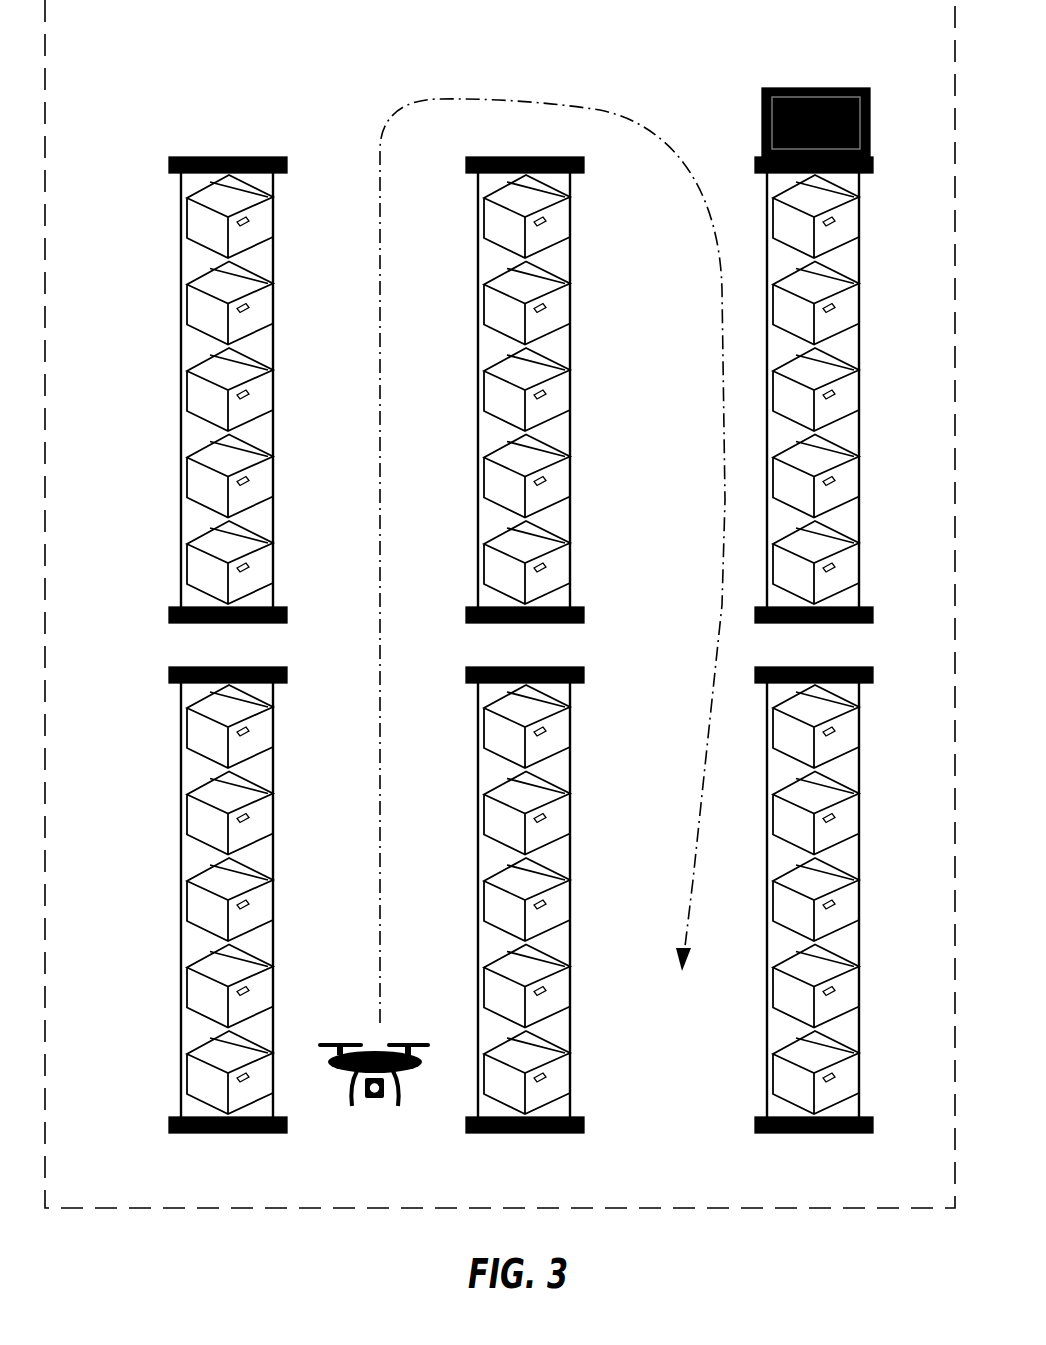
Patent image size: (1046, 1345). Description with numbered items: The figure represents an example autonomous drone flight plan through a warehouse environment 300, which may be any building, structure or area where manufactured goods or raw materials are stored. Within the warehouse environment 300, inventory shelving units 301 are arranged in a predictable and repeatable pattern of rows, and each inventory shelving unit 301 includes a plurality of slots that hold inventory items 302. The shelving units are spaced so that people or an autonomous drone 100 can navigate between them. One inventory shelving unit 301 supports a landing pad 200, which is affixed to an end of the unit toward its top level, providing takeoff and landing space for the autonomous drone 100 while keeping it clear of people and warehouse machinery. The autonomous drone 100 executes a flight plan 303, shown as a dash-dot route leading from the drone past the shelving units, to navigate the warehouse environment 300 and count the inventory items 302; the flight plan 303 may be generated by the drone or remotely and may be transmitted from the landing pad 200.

The warehouse environment 300 is at (377, 34).
The inventory shelving unit 301 is at (197, 345).
The inventory item 302 is at (197, 389).
The flight plan 303 is at (728, 512).
The landing pad 200 is at (841, 81).
The autonomous drone 100 is at (355, 1111).